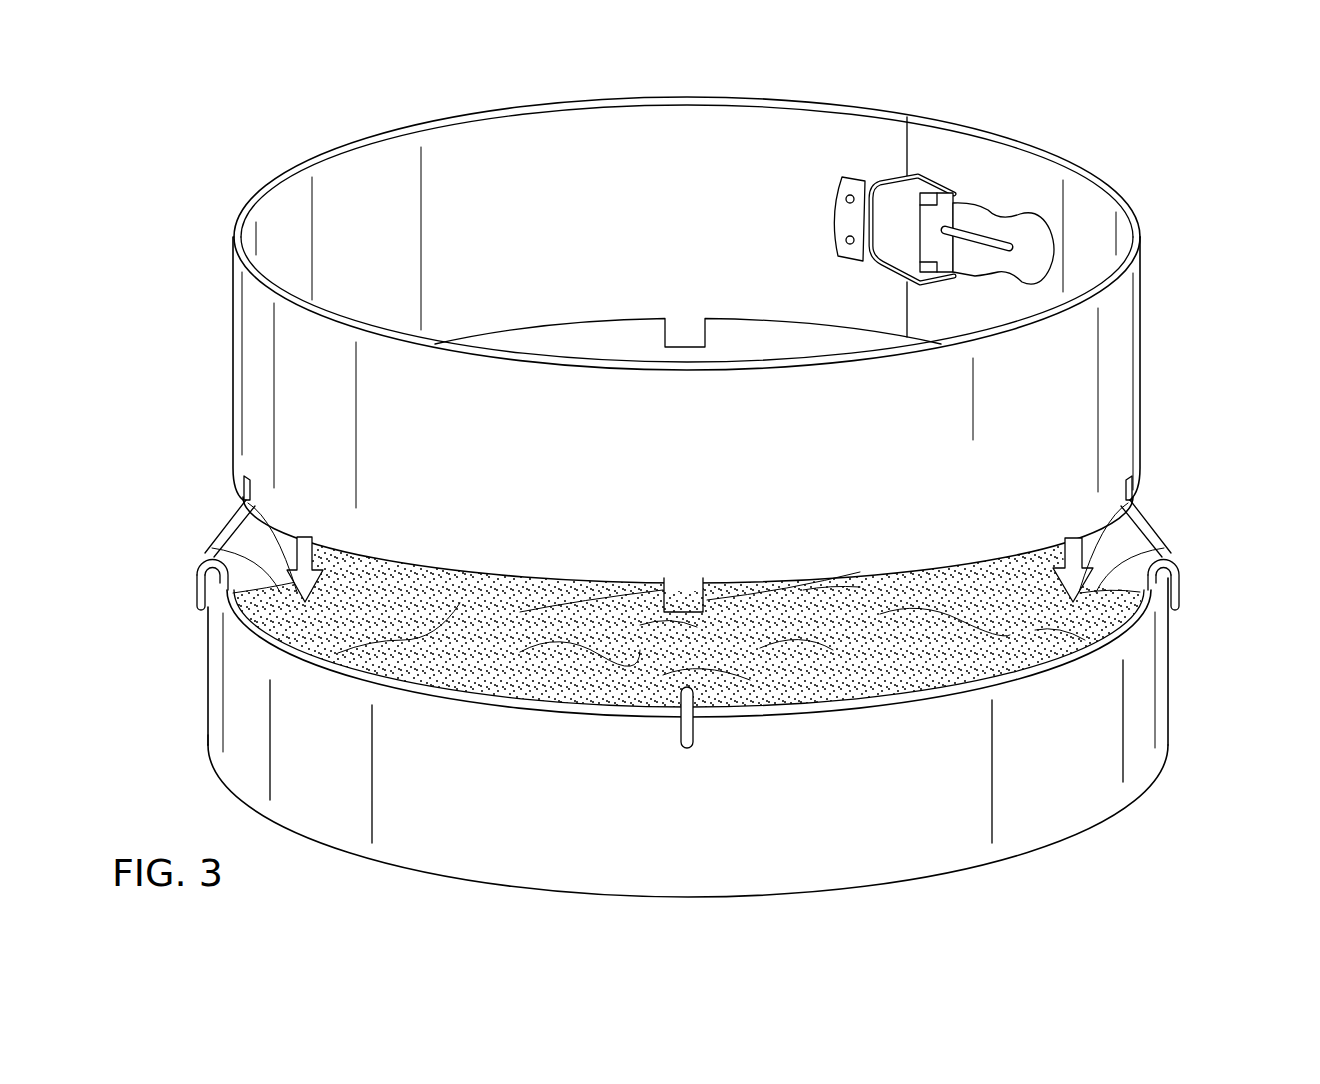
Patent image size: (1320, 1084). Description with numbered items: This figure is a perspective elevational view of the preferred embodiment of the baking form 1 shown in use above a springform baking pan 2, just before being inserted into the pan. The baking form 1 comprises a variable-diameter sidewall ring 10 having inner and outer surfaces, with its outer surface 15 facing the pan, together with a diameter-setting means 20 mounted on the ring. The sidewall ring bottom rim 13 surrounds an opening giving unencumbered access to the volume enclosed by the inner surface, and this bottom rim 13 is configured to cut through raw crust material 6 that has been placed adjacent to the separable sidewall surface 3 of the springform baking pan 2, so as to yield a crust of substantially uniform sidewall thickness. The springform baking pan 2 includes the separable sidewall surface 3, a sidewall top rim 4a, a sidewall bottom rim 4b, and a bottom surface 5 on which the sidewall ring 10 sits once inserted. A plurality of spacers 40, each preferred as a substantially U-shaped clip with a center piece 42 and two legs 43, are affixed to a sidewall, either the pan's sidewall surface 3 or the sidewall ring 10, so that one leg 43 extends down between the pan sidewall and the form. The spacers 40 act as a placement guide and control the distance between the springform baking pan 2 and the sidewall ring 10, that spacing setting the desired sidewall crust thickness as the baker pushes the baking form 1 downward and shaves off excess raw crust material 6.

The baking form 1 is at (1078, 165).
The sidewall ring 10 is at (233, 240).
The outer surface 15 is at (233, 380).
The diameter-setting means 20 is at (926, 176).
The springform baking pan 2 is at (208, 668).
The separable sidewall surface 3 is at (1122, 540).
The sidewall top rim 4a is at (232, 515).
The sidewall bottom rim 4b is at (220, 773).
The bottom surface 5 is at (1123, 640).
The raw crust material 6 is at (210, 549).
The sidewall ring bottom rim 13 is at (215, 532).
The spacers 40 is at (1178, 560).
The center piece 42 is at (1170, 542).
The legs 43 is at (1138, 566).